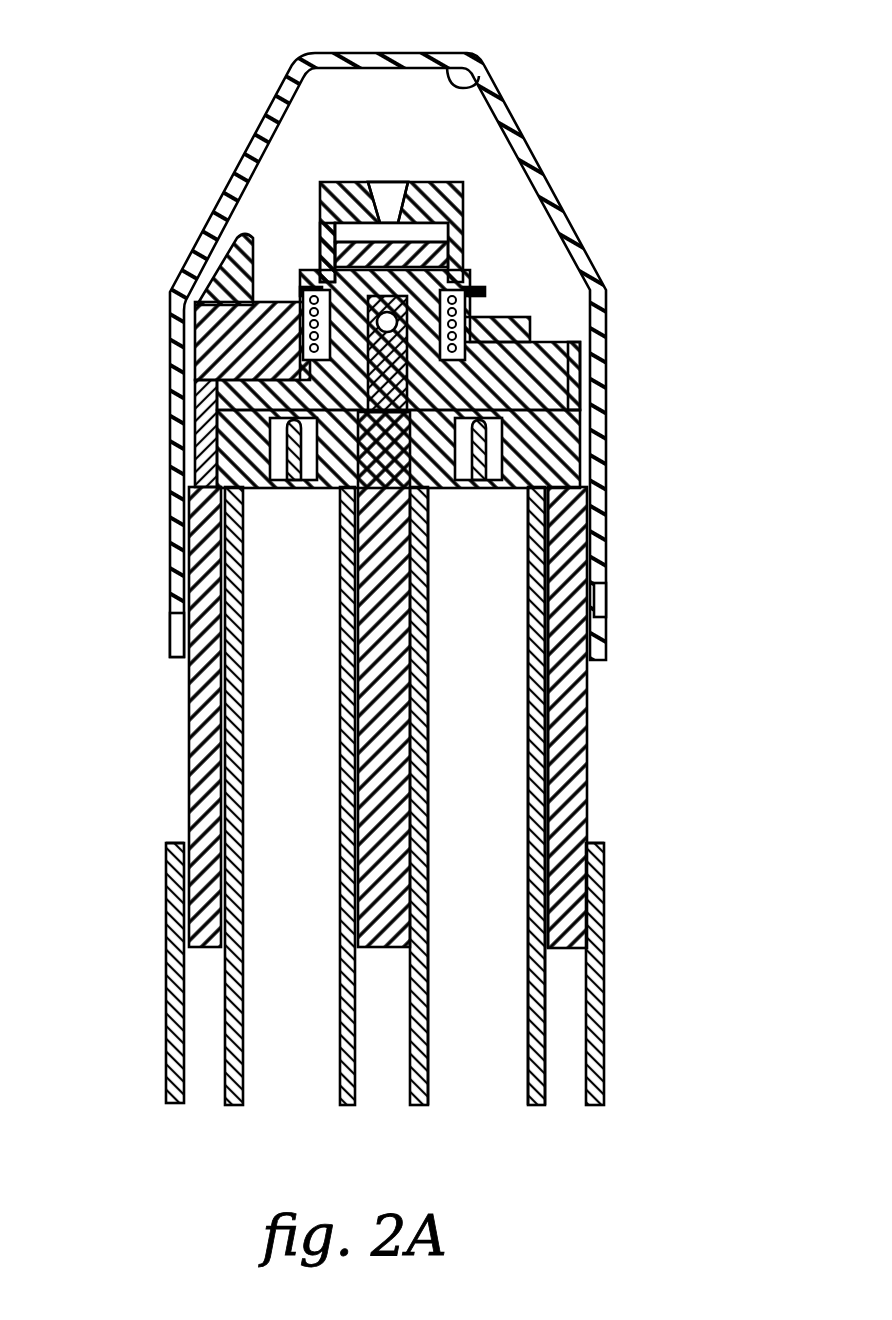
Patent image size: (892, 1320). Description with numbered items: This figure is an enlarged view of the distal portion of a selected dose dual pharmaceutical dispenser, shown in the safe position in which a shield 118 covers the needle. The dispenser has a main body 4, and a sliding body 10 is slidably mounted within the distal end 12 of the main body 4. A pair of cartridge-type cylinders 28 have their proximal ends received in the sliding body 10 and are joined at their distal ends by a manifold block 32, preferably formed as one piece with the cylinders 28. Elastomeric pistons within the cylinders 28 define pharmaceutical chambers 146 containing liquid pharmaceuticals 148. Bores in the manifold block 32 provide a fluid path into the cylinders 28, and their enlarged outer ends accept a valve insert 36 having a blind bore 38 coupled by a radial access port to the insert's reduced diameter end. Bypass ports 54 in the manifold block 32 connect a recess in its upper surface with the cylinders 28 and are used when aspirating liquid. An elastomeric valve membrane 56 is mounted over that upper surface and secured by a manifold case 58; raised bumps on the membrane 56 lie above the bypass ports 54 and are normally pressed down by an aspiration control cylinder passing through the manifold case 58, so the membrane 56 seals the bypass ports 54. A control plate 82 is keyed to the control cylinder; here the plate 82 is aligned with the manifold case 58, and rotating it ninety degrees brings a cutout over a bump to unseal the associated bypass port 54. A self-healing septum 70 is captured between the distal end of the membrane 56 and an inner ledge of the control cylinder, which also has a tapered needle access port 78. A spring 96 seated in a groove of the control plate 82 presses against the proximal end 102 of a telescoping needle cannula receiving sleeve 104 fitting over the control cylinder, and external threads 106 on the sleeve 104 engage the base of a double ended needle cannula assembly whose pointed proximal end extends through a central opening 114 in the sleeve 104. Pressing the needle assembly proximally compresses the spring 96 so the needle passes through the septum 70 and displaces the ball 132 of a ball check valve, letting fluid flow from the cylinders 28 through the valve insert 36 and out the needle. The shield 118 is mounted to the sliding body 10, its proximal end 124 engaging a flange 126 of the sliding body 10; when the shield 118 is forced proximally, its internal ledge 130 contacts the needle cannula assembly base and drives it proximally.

The main body 4 is at (600, 922).
The sliding body 10 is at (590, 768).
The distal end 12 is at (600, 845).
The cartridge-type cylinders 28 is at (545, 1025).
The manifold block 32 is at (583, 432).
The valve insert 36 is at (228, 493).
The blind bore 38 is at (540, 488).
The bypass ports 54 is at (240, 555).
The valve membrane 56 is at (550, 398).
The manifold case 58 is at (580, 362).
The self-healing septum 70 is at (380, 252).
The tapered needle access port 78 is at (322, 208).
The control plate 82 is at (525, 330).
The spring 96 is at (300, 298).
The proximal end 102 is at (492, 312).
The telescoping needle cannula receiving sleeve 104 is at (460, 240).
The external threads 106 is at (463, 195).
The central opening 114 is at (387, 195).
The shield 118 is at (516, 110).
The proximal end 124 is at (605, 568).
The flange 126 is at (176, 600).
The internal ledge 130 is at (487, 72).
The ball 132 is at (235, 340).
The pharmaceutical chambers 146 is at (510, 850).
The liquid pharmaceuticals 148 is at (492, 748).